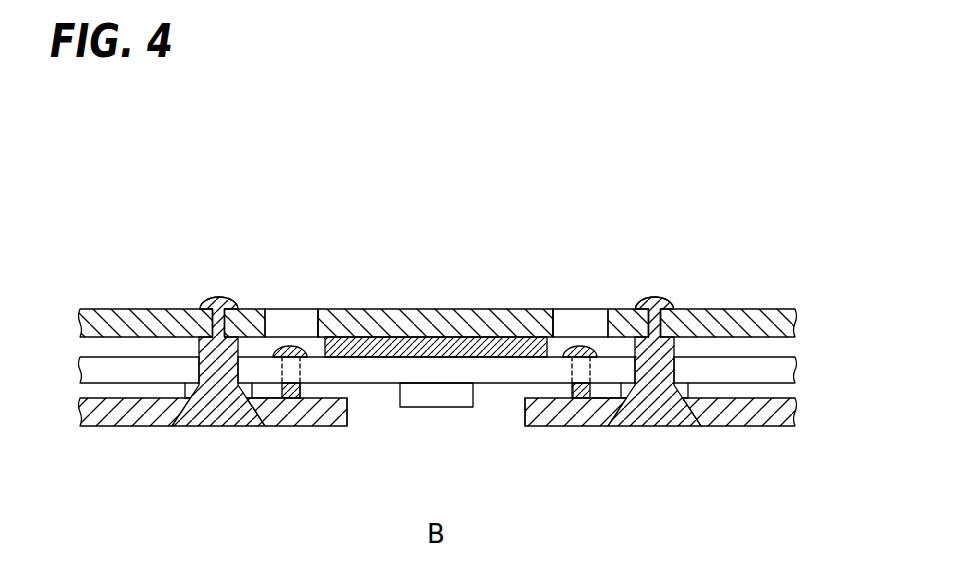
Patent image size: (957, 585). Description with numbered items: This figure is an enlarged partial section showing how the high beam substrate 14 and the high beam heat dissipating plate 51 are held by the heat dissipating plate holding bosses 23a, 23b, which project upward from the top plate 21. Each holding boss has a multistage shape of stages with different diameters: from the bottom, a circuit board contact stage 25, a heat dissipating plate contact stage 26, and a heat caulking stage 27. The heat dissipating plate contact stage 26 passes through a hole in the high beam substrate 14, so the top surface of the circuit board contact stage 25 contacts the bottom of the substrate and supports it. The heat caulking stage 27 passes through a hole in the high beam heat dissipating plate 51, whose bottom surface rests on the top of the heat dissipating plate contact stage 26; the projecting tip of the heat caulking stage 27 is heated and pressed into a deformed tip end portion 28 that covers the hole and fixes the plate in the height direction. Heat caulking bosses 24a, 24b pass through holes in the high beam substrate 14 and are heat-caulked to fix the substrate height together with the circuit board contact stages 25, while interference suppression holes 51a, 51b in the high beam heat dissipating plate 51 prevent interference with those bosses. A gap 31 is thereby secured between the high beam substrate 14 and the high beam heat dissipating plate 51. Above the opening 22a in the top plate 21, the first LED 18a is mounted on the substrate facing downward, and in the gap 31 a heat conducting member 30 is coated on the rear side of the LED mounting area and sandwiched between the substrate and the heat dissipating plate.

The high beam substrate 14 is at (785, 368).
The first LED 18a is at (453, 397).
The top plate 21 is at (120, 412).
The opening 22a is at (371, 412).
The heat dissipating plate holding boss 23a is at (221, 276).
The heat dissipating plate holding boss 23b is at (658, 276).
The heat caulking boss 24a is at (290, 345).
The heat caulking boss 24b is at (583, 345).
The circuit board contact stage 25 is at (185, 388).
The heat dissipating plate contact stage 26 is at (238, 357).
The heat caulking stage 27 is at (243, 308).
The deformed tip end portion 28 is at (215, 298).
The heat conducting member 30 is at (433, 337).
The gap 31 is at (104, 346).
The high beam heat dissipating plate 51 is at (785, 323).
The interference suppression hole 51a is at (308, 309).
The interference suppression hole 51b is at (564, 309).